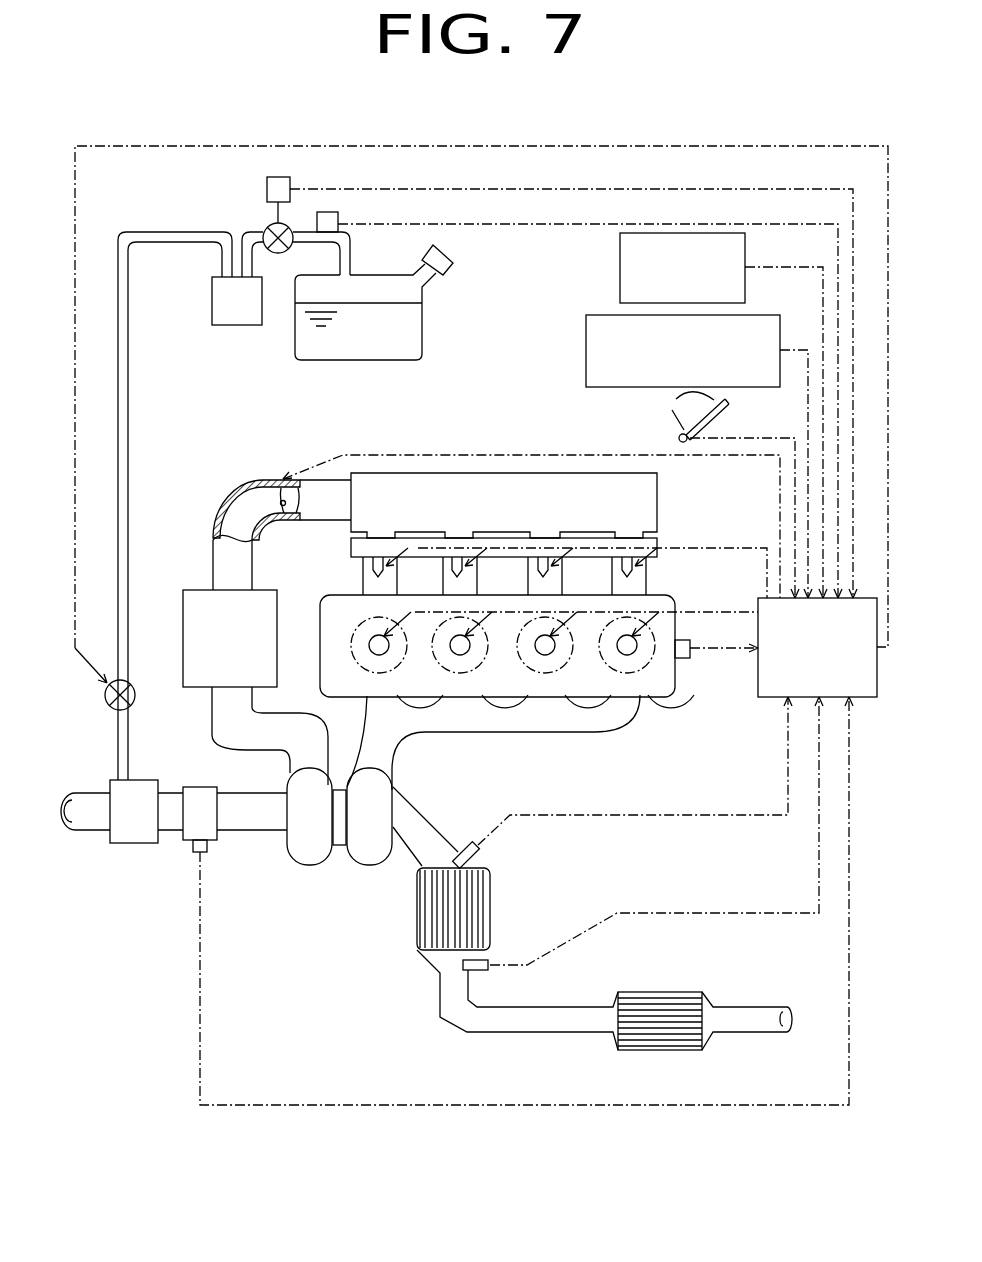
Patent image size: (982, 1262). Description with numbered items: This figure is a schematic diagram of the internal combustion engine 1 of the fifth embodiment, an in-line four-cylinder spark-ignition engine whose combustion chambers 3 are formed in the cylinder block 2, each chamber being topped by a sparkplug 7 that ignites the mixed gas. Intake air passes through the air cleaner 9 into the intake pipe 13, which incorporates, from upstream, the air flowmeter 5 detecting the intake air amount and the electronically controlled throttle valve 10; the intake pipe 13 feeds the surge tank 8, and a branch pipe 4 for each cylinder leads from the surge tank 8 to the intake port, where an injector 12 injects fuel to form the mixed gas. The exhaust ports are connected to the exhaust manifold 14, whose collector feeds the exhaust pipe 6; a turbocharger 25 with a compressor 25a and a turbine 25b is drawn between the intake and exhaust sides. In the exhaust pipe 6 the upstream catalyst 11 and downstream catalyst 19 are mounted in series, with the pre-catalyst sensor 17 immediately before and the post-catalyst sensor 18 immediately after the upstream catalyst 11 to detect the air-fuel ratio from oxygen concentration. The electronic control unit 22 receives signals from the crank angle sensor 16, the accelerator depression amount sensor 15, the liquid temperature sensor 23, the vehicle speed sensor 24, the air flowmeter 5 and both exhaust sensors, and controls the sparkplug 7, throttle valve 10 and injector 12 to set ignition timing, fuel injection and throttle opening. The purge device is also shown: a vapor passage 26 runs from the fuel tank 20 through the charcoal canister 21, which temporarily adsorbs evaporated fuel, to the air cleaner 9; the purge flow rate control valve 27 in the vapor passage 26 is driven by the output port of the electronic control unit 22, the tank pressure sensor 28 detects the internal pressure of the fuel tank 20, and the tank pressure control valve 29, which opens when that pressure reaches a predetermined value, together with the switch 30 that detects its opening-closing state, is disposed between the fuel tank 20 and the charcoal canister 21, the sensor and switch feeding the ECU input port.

The internal combustion engine 1 is at (535, 420).
The cylinder block 2 is at (672, 598).
The combustion chamber 3 is at (353, 633).
The branch pipe 4 is at (645, 575).
The air flowmeter 5 is at (187, 845).
The exhaust pipe 6 is at (408, 836).
The sparkplug 7 is at (362, 630).
The surge tank 8 is at (415, 473).
The air cleaner 9 is at (140, 790).
The throttle valve 10 is at (254, 482).
The upstream catalyst 11 is at (193, 648).
The injector 12 is at (363, 563).
The intake pipe 13 is at (218, 578).
The exhaust manifold 14 is at (537, 713).
The accelerator depression amount sensor 15 is at (680, 437).
The crank angle sensor 16 is at (677, 637).
The pre-catalyst sensor 17 is at (478, 862).
The post-catalyst sensor 18 is at (478, 972).
The downstream catalyst 19 is at (655, 992).
The fuel tank 20 is at (322, 360).
The charcoal canister 21 is at (232, 325).
The electronic control unit 22 is at (758, 676).
The liquid temperature sensor 23 is at (586, 330).
The vehicle speed sensor 24 is at (620, 268).
The turbocharger 25 is at (343, 772).
The compressor 25a is at (305, 858).
The turbine 25b is at (372, 858).
The vapor passage 26 is at (156, 232).
The purge flow rate control valve 27 is at (137, 693).
The tank pressure sensor 28 is at (338, 230).
The tank pressure control valve 29 is at (265, 232).
The switch 30 is at (267, 190).